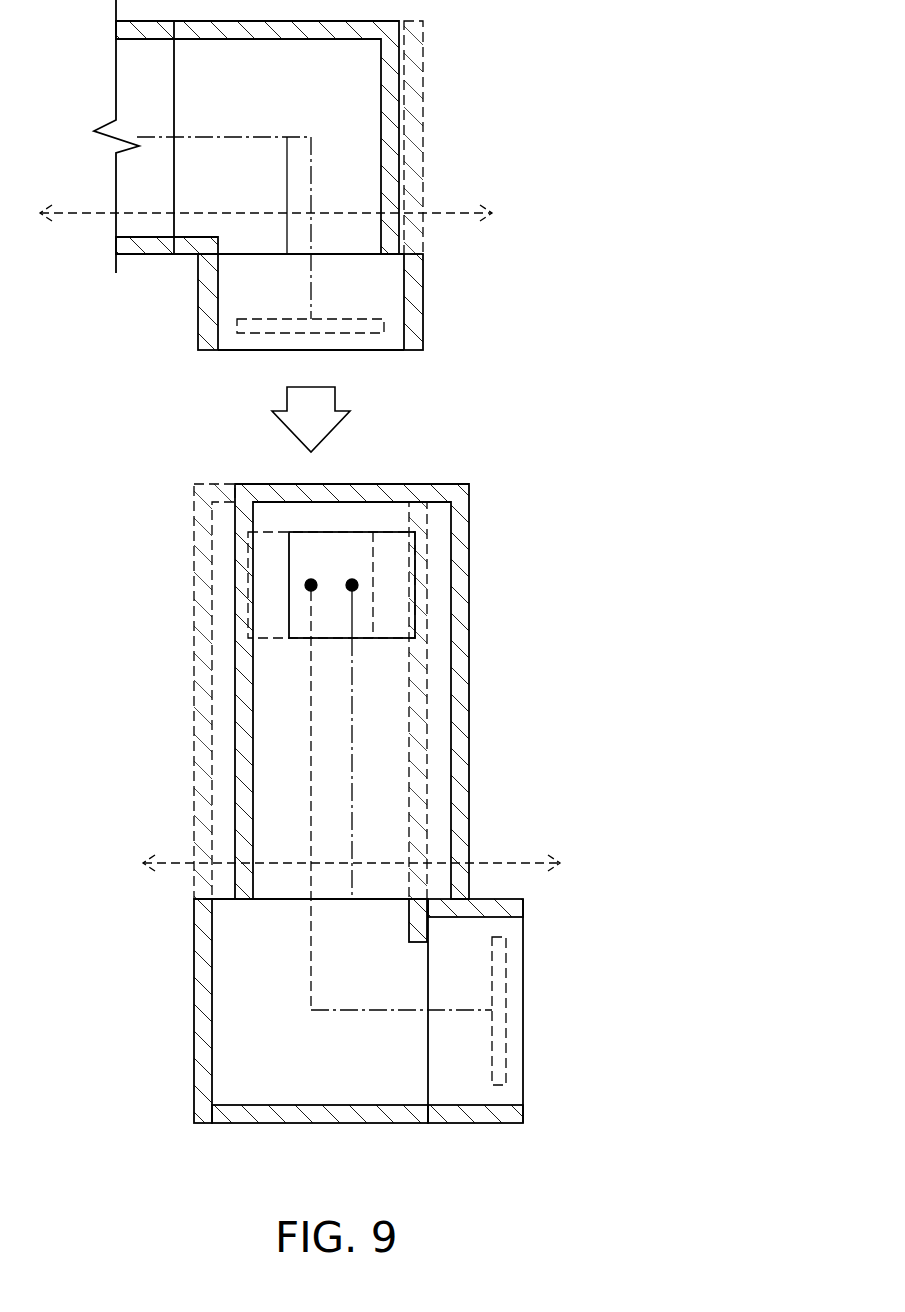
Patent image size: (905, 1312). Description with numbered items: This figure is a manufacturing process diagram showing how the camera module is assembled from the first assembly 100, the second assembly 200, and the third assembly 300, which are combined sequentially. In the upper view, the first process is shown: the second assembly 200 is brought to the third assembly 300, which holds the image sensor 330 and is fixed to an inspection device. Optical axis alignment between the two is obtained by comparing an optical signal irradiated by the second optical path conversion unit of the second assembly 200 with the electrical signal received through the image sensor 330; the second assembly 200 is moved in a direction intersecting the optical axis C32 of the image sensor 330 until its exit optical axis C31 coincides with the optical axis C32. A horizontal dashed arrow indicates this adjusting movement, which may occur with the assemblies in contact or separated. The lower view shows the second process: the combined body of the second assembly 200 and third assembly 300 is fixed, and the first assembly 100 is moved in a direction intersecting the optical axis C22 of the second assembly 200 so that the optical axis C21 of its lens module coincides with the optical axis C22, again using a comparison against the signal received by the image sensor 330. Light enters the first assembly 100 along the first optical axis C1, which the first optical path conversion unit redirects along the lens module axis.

The first assembly 100 is at (470, 519).
The second assembly 200 is at (400, 91).
The third assembly 300 is at (423, 279).
The image sensor 330 is at (375, 325).
The first optical axis C1 is at (352, 585).
The optical axis of the lens module C21 is at (352, 775).
The optical axis in the incident direction of the second optical path conversion uni C22 is at (312, 943).
The optical axis in the exit direction of the second optical path conversion unit C31 is at (287, 148).
The optical axis of the image sensor C32 is at (311, 293).